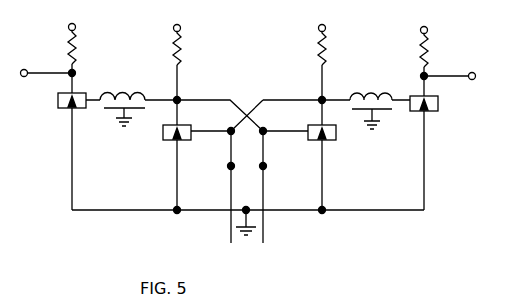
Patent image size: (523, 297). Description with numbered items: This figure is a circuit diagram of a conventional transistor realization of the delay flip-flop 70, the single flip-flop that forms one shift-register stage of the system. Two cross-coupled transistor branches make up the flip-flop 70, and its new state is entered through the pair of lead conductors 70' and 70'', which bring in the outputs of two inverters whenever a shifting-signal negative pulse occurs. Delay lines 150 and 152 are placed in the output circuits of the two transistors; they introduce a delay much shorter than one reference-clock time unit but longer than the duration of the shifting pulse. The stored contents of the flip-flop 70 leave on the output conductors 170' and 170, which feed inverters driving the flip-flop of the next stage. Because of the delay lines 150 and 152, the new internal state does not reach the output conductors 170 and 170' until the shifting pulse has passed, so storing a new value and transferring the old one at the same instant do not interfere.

The flip-flop 70 is at (248, 130).
The lead conductor 70' is at (211, 188).
The lead conductor 70'' is at (287, 188).
The delay line 150 is at (118, 88).
The delay line 152 is at (367, 90).
The output conductor 170 is at (39, 42).
The output conductor 170' is at (454, 44).